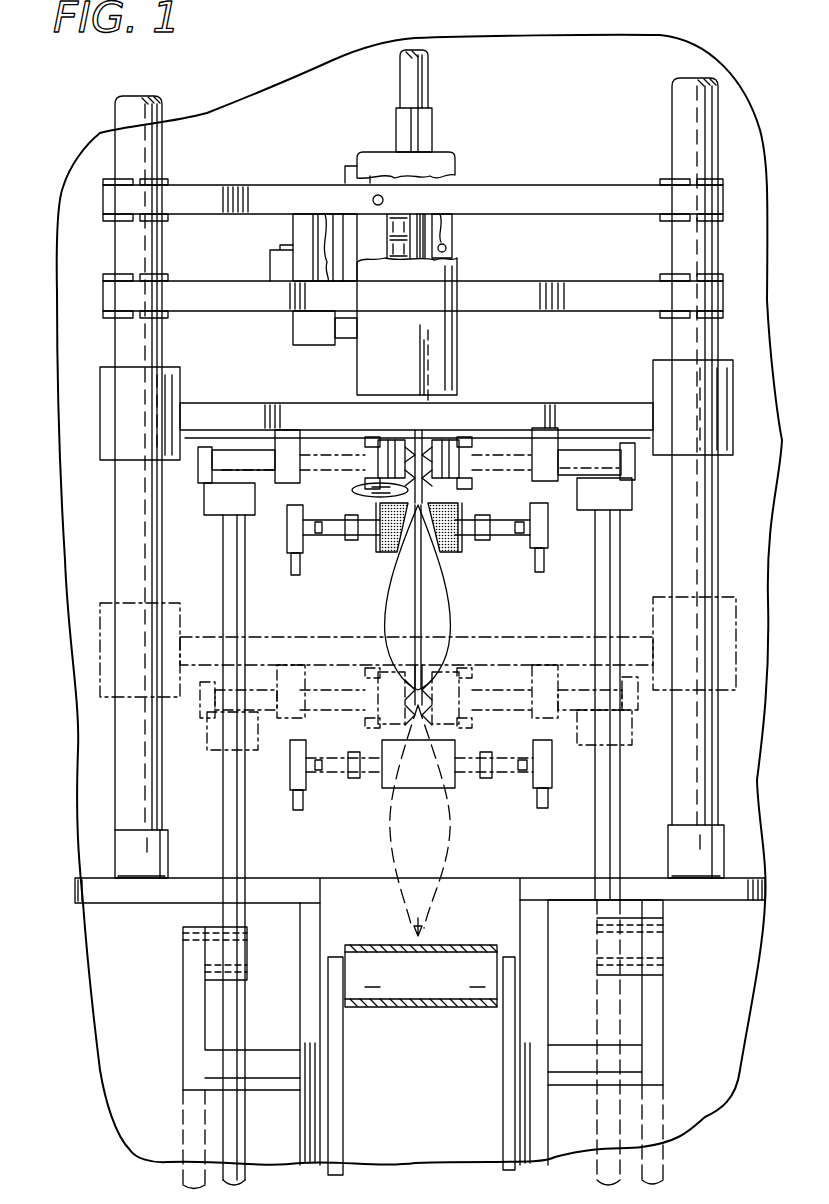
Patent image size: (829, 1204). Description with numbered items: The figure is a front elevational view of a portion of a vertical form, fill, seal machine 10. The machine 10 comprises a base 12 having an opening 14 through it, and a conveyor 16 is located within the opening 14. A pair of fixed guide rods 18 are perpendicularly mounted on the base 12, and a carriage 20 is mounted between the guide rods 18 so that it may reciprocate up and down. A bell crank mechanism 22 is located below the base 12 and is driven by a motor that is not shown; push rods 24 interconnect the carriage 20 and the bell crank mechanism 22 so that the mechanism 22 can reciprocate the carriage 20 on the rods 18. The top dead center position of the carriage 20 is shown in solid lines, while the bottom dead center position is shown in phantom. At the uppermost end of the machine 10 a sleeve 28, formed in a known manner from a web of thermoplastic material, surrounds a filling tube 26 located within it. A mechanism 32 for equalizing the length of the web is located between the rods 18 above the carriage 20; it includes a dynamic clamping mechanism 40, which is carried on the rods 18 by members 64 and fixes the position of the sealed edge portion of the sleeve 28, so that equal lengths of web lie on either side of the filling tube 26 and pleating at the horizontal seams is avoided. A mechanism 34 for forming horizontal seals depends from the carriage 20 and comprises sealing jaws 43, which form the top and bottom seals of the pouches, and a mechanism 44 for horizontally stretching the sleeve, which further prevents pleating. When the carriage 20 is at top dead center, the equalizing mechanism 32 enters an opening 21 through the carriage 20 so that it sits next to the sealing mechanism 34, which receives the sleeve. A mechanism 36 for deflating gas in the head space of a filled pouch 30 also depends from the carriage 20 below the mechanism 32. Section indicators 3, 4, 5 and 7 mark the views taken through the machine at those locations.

The vertical form/fill/seal machine 10 is at (98, 325).
The base 12 is at (147, 892).
The opening 14 is at (420, 1013).
The conveyor 16 is at (405, 996).
The fixed guide rods 18 is at (123, 746).
The carriage 20 is at (620, 416).
The opening 21 is at (430, 351).
The bell crank mechanism 22 is at (193, 1012).
The push rods 24 is at (232, 787).
The filling tube 26 is at (428, 62).
The sleeve 28 is at (428, 128).
The filled pouch 30 is at (395, 593).
The mechanism for equalizing the length of the web 32 is at (468, 322).
The mechanism for forming horizontal seals 34 is at (477, 680).
The mechanism for deflating gas 36 is at (462, 515).
The dynamic clamping mechanism 40 is at (338, 162).
The sealing jaws 43 is at (400, 462).
The mechanism for horizontally stretching the sleeve 44 is at (412, 440).
The members 64 is at (590, 203).
The section line 3 is at (240, 300).
The section line 4 is at (415, 90).
The section line 5 is at (190, 440).
The section line 7 is at (270, 497).